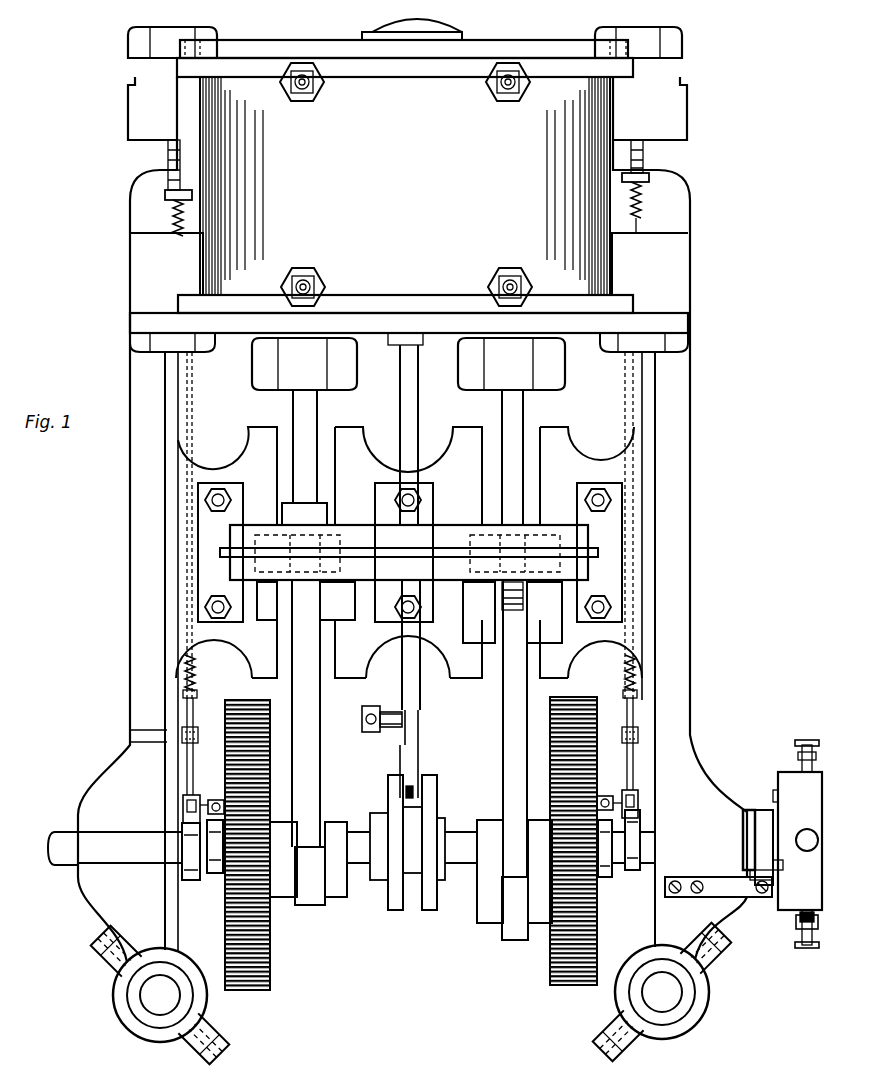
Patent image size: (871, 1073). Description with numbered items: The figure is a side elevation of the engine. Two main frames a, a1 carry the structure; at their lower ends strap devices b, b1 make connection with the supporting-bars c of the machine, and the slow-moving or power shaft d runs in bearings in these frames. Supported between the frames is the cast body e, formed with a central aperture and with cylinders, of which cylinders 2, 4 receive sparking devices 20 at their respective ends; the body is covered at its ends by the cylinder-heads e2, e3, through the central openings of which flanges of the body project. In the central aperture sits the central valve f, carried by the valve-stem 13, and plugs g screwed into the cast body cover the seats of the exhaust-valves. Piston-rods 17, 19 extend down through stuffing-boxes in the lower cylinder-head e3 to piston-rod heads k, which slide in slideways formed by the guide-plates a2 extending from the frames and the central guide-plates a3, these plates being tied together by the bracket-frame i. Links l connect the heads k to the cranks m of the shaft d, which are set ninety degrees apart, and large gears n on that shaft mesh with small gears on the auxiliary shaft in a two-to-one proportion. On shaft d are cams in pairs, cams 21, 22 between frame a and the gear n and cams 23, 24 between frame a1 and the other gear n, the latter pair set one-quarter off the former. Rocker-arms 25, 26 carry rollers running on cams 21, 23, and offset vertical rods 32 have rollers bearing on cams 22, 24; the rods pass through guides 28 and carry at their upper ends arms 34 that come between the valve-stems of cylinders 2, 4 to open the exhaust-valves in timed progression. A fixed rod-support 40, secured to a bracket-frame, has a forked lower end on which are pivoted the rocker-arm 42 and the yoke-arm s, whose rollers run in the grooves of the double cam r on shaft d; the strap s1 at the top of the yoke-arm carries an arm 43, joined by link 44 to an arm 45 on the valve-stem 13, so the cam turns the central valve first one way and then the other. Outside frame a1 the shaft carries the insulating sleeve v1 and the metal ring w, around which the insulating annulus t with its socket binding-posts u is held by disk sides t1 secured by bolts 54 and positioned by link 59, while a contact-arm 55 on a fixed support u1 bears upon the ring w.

The central valve f is at (452, 20).
The plugs g is at (128, 44).
The cylinder-head e2 is at (406, 47).
The sparking devices 20 is at (300, 92).
The cast body e is at (405, 186).
The cylinder 2 is at (288, 187).
The cylinder 4 is at (503, 187).
The lower cylinder-head e3 is at (403, 330).
The main frame a is at (132, 548).
The main frame a1 is at (690, 556).
The arms 34 is at (165, 196).
The vertical rods 32 is at (170, 218).
The guides 28 is at (198, 736).
The rocker-arm 25 is at (217, 800).
The rocker-arm 26 is at (608, 796).
The piston-rod 17 is at (304, 431).
The piston-rod 19 is at (511, 431).
The valve-stem 13 is at (400, 422).
The guide-plates a2 is at (409, 552).
The guide-plates a3 is at (408, 552).
The bracket-frame i is at (409, 553).
The piston-rod heads k is at (409, 612).
The links l is at (321, 738).
The fixed rod-support 40 is at (422, 694).
The strap s1 is at (419, 740).
The yoke-arm s is at (419, 766).
The arm 43 is at (390, 728).
The link 44 is at (365, 708).
The arm 45 is at (392, 704).
The rocker-arm 42 is at (408, 786).
The double cam r is at (394, 911).
The power shaft d is at (460, 830).
The cam 22 is at (192, 882).
The cam 21 is at (215, 875).
The cam 23 is at (606, 879).
The cam 24 is at (632, 872).
The cranks m is at (340, 896).
The large gears n is at (272, 956).
The strap device b is at (150, 1040).
The strap device b1 is at (700, 1020).
The supporting-bars c is at (138, 1010).
The fixed support u1 is at (732, 897).
The metal ring w is at (743, 836).
The sleeve v1 is at (763, 810).
The annulus t is at (797, 841).
The disk sides t1 is at (778, 790).
The socket binding-posts u is at (799, 833).
The bolts 54 is at (780, 878).
The link 59 is at (808, 912).
The contact-arm 55 is at (752, 897).